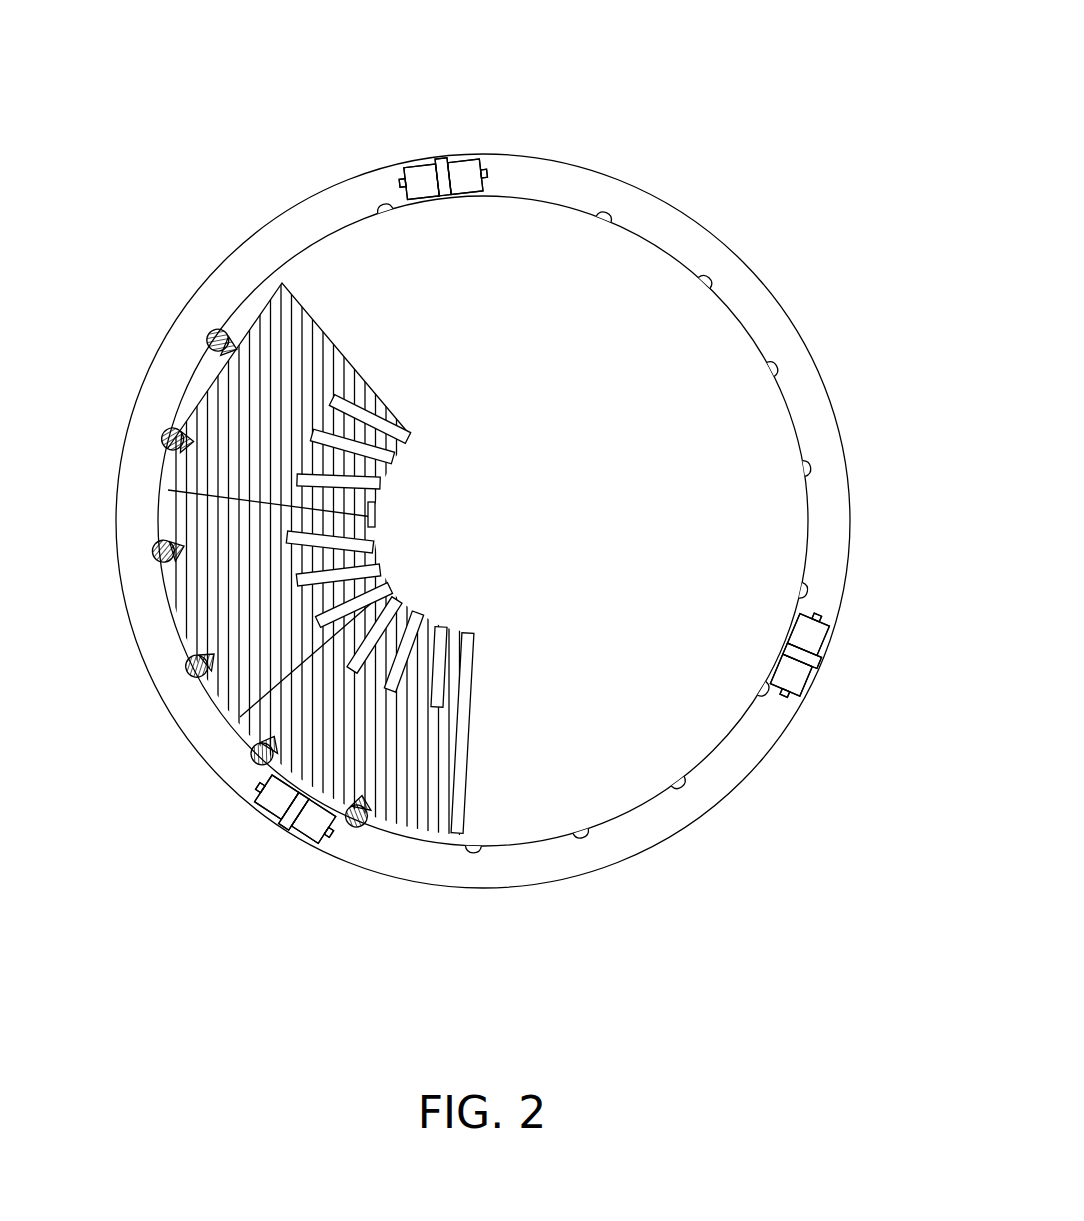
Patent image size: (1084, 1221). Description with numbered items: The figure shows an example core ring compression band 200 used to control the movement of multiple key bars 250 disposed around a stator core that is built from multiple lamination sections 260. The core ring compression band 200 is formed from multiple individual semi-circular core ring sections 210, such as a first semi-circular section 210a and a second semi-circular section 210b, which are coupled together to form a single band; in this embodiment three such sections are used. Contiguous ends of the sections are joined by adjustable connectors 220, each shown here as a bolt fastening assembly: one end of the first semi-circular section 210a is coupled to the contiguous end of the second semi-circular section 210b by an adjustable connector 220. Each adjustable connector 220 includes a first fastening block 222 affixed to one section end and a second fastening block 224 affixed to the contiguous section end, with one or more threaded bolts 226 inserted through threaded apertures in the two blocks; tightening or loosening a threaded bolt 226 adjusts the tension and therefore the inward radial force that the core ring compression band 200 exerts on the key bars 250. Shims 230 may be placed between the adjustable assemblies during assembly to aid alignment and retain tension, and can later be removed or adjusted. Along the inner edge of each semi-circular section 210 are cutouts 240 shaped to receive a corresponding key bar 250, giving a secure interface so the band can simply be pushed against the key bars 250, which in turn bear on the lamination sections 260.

The core ring compression band 200 is at (110, 955).
The semi-circular core ring section 210 is at (338, 205).
The first semi-circular section 210a is at (683, 238).
The second semi-circular section 210b is at (683, 808).
The adjustable connector 220 is at (453, 148).
The first fastening block 222 is at (430, 170).
The second fastening block 224 is at (470, 167).
The threaded bolt 226 is at (402, 163).
The shim 230 is at (442, 157).
The cutout 240 is at (587, 838).
The key bar 250 is at (207, 342).
The lamination section 260 is at (228, 597).